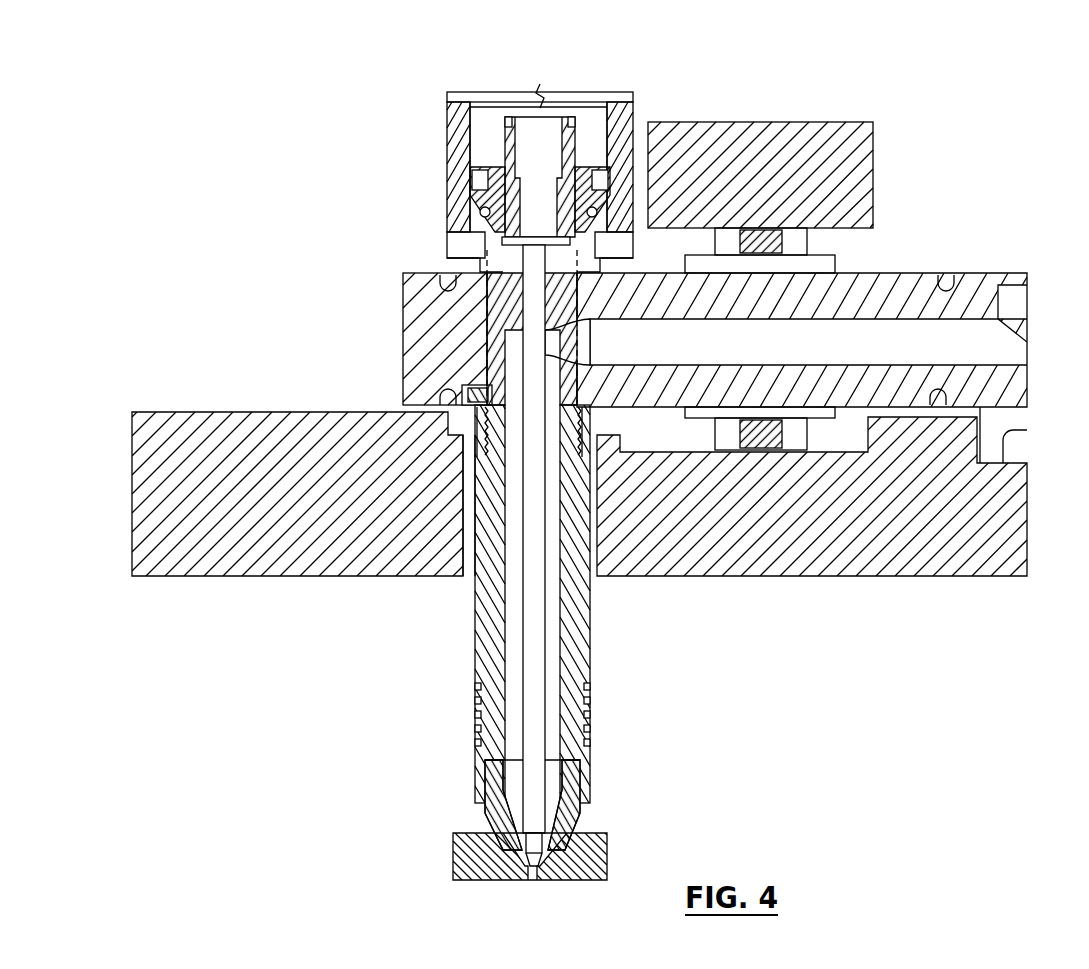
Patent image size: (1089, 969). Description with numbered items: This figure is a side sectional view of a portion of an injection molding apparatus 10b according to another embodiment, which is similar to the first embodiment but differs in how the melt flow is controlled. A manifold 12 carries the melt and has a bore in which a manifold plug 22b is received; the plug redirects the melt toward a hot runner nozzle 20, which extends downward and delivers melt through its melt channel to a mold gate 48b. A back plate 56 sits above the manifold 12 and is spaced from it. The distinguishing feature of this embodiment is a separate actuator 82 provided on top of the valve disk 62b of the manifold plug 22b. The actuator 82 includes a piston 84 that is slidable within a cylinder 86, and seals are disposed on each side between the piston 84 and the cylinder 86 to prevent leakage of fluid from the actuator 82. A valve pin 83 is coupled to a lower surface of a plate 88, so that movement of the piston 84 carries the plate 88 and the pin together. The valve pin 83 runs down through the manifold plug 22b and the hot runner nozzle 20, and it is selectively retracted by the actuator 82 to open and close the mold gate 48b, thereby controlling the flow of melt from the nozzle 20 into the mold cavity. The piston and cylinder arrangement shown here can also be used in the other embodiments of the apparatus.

The injection molding apparatus 10b is at (579, 479).
The manifold 12 is at (905, 285).
The hot runner nozzle 20 is at (578, 663).
The manifold plug 22b is at (492, 337).
The mold gate 48b is at (530, 870).
The back plate 56 is at (850, 150).
The valve disk 62b is at (503, 256).
The actuator 82 is at (469, 150).
The valve pin 83 is at (527, 625).
The piston 84 is at (625, 148).
The cylinder 86 is at (578, 170).
The plate 88 is at (478, 222).